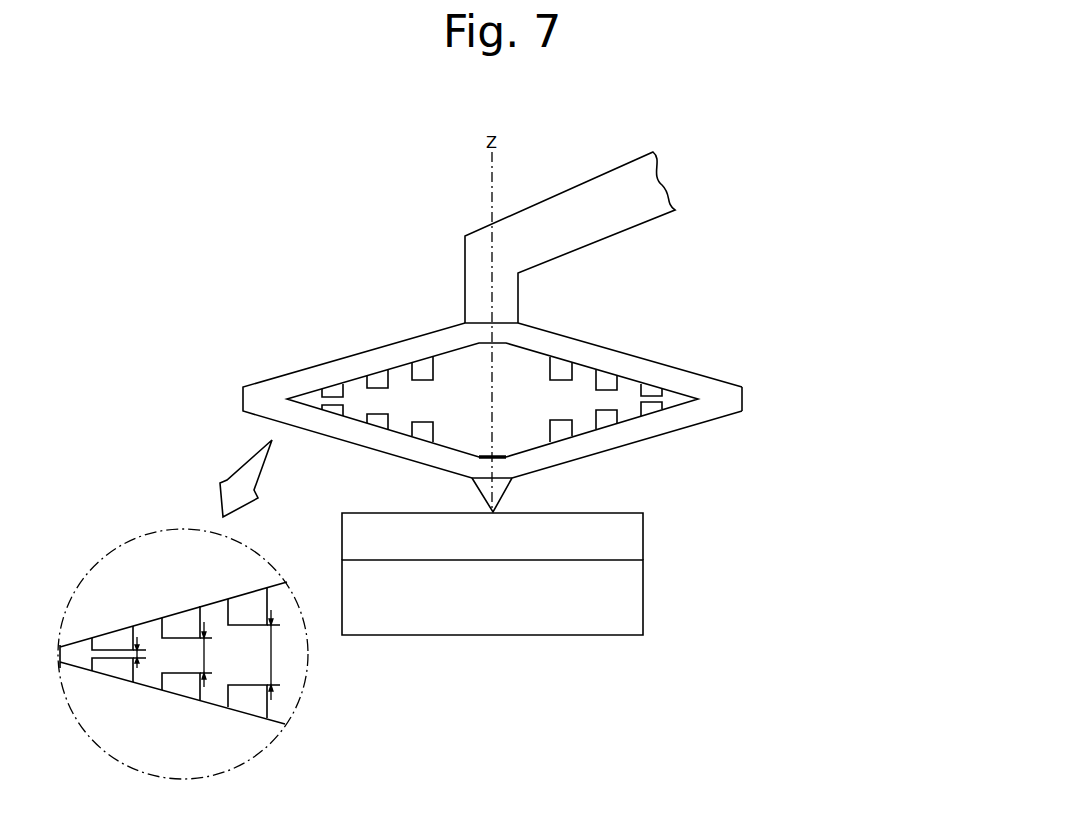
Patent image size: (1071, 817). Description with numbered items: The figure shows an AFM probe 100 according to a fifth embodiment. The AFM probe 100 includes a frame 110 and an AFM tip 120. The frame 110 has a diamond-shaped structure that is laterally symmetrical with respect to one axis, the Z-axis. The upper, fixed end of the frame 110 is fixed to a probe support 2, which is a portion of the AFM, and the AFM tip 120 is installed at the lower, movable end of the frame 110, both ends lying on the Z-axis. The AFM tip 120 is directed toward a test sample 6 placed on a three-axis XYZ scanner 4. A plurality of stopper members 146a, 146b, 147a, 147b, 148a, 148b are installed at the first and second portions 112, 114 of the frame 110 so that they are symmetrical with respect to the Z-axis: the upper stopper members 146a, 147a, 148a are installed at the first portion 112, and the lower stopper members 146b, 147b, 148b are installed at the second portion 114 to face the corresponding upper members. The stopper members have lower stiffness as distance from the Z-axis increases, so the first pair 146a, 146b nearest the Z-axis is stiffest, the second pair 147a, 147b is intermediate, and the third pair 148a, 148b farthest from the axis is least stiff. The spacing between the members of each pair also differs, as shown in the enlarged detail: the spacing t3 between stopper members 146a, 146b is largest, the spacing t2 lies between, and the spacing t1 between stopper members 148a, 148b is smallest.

The probe support 2 is at (595, 178).
The AFM probe 100 is at (698, 336).
The frame 110 is at (888, 355).
The first portion 112 is at (718, 378).
The second portion 114 is at (720, 412).
The AFM tip 120 is at (507, 497).
The test sample 6 is at (643, 535).
The XYZ scanner 4 is at (643, 598).
The upper stopper member of first pair 146a is at (427, 360).
The lower stopper member of first pair 146b is at (427, 437).
The upper stopper member of second pair 147a is at (378, 372).
The lower stopper member of second pair 147b is at (383, 427).
The upper stopper member of third pair 148a is at (333, 387).
The lower stopper member of third pair 148b is at (338, 413).
The spacing t1 is at (146, 652).
The spacing t2 is at (213, 654).
The spacing t3 is at (280, 655).